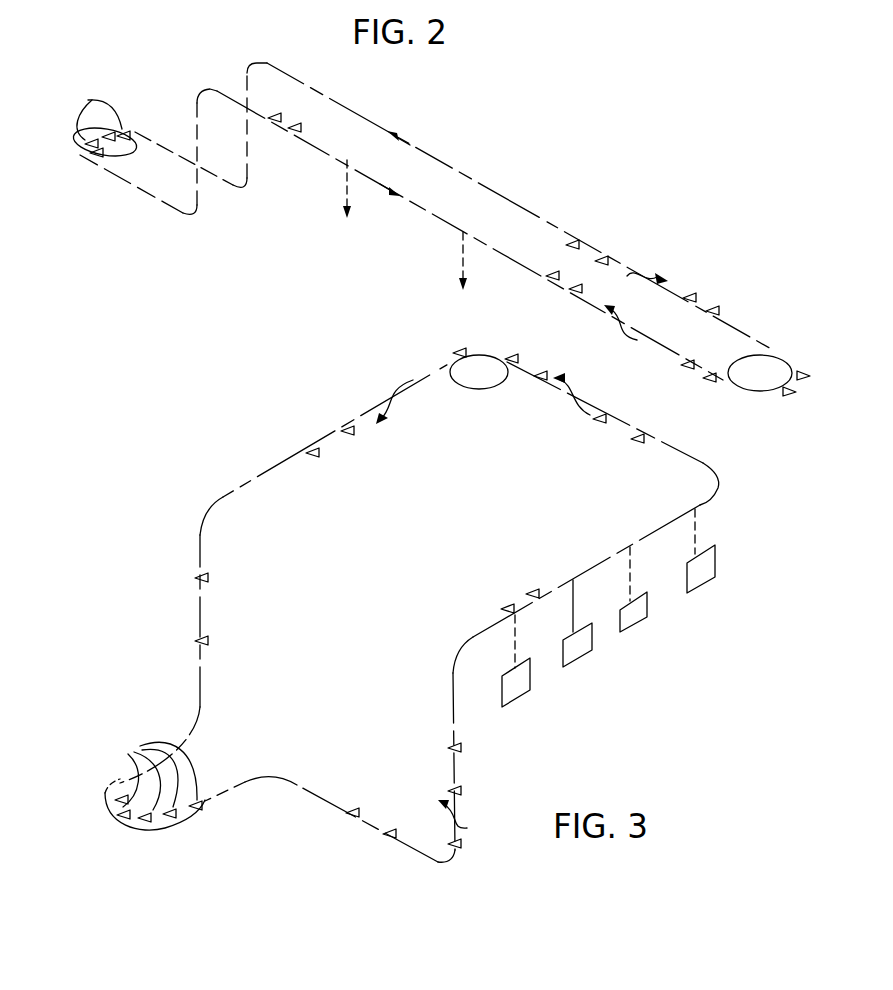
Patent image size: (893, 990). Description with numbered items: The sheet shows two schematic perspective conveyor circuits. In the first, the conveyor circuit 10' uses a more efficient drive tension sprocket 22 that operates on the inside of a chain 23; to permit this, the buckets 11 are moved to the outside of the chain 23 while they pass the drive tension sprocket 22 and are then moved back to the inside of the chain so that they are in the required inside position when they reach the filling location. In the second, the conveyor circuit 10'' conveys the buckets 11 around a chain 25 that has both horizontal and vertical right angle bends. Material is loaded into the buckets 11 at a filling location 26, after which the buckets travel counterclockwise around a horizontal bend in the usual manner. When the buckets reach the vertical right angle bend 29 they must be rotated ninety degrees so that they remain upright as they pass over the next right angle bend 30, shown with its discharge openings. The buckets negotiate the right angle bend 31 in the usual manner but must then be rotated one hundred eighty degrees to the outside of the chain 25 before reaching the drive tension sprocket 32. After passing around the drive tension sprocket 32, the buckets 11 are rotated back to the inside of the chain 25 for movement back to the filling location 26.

In FIG. 2, the conveyor circuit 10' is at (410, 104).
In FIG. 3, the conveyor circuit 10'' is at (229, 893).
In FIG. 2, the buckets 11 is at (92, 100).
In FIG. 3, the buckets 11 is at (342, 430).
In FIG. 2, the drive tension sprocket 22 is at (763, 385).
In FIG. 2, the chain 23 is at (468, 177).
In FIG. 3, the chain 25 is at (200, 678).
In FIG. 3, the filling location 26 is at (137, 826).
In FIG. 3, the vertical right angle bend 29 is at (448, 866).
In FIG. 3, the right angle bend 30 is at (456, 645).
In FIG. 3, the right angle bend 31 is at (724, 483).
In FIG. 3, the drive tension sprocket 32 is at (474, 378).